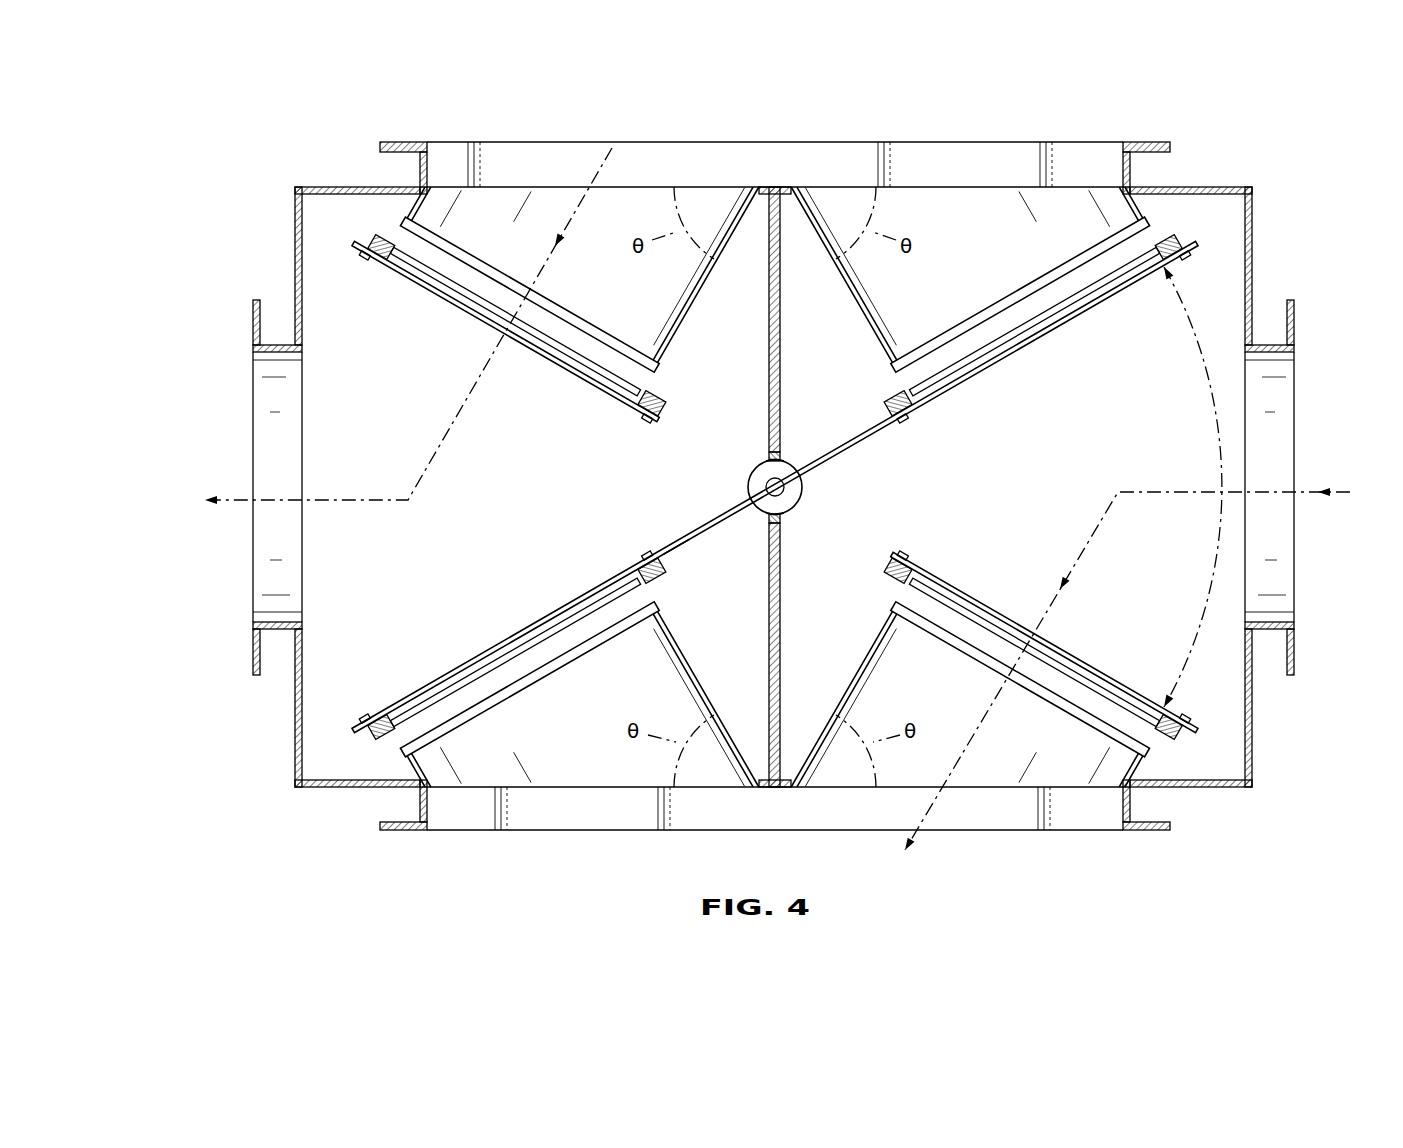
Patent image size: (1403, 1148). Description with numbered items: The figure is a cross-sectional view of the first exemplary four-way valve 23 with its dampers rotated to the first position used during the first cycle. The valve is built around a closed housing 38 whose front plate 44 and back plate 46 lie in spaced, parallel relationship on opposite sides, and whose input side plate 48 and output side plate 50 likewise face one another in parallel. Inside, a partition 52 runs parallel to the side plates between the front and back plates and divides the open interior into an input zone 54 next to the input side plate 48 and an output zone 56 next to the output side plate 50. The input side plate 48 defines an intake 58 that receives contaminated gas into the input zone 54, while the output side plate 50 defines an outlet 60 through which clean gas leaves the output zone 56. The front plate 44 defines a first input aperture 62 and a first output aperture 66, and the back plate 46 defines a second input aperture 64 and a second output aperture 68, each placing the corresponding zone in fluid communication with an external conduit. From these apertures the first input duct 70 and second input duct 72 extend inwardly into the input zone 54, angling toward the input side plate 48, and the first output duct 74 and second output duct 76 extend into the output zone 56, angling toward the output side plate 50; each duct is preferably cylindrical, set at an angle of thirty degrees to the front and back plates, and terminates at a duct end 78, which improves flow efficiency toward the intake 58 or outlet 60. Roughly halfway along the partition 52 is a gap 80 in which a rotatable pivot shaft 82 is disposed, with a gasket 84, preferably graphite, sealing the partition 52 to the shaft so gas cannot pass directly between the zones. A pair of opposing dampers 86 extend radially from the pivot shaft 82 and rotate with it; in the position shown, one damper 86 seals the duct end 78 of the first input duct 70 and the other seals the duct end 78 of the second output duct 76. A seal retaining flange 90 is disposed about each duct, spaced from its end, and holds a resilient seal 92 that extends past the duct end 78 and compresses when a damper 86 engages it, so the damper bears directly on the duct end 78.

The four-way valve 23 is at (288, 156).
The housing 38 is at (784, 482).
The front plate 44 is at (1190, 186).
The back plate 46 is at (1202, 790).
The input side plate 48 is at (1254, 742).
The output side plate 50 is at (300, 730).
The partition 52 is at (769, 340).
The input zone 54 is at (1250, 285).
The output zone 56 is at (300, 282).
The intake 58 is at (1248, 568).
The outlet 60 is at (300, 580).
The first input aperture 62 is at (938, 186).
The second input aperture 64 is at (985, 780).
The first output aperture 66 is at (488, 188).
The second output aperture 68 is at (548, 787).
The first input duct 70 is at (878, 330).
The second input duct 72 is at (862, 672).
The first output duct 74 is at (665, 350).
The second output duct 76 is at (690, 655).
The duct end 78 is at (1030, 343).
The gap 80 is at (770, 456).
The pivot shaft 82 is at (755, 478).
The gasket 84 is at (790, 452).
The dampers 86 is at (660, 545).
The seal retaining flange 90 is at (368, 242).
The resilient seal 92 is at (378, 262).